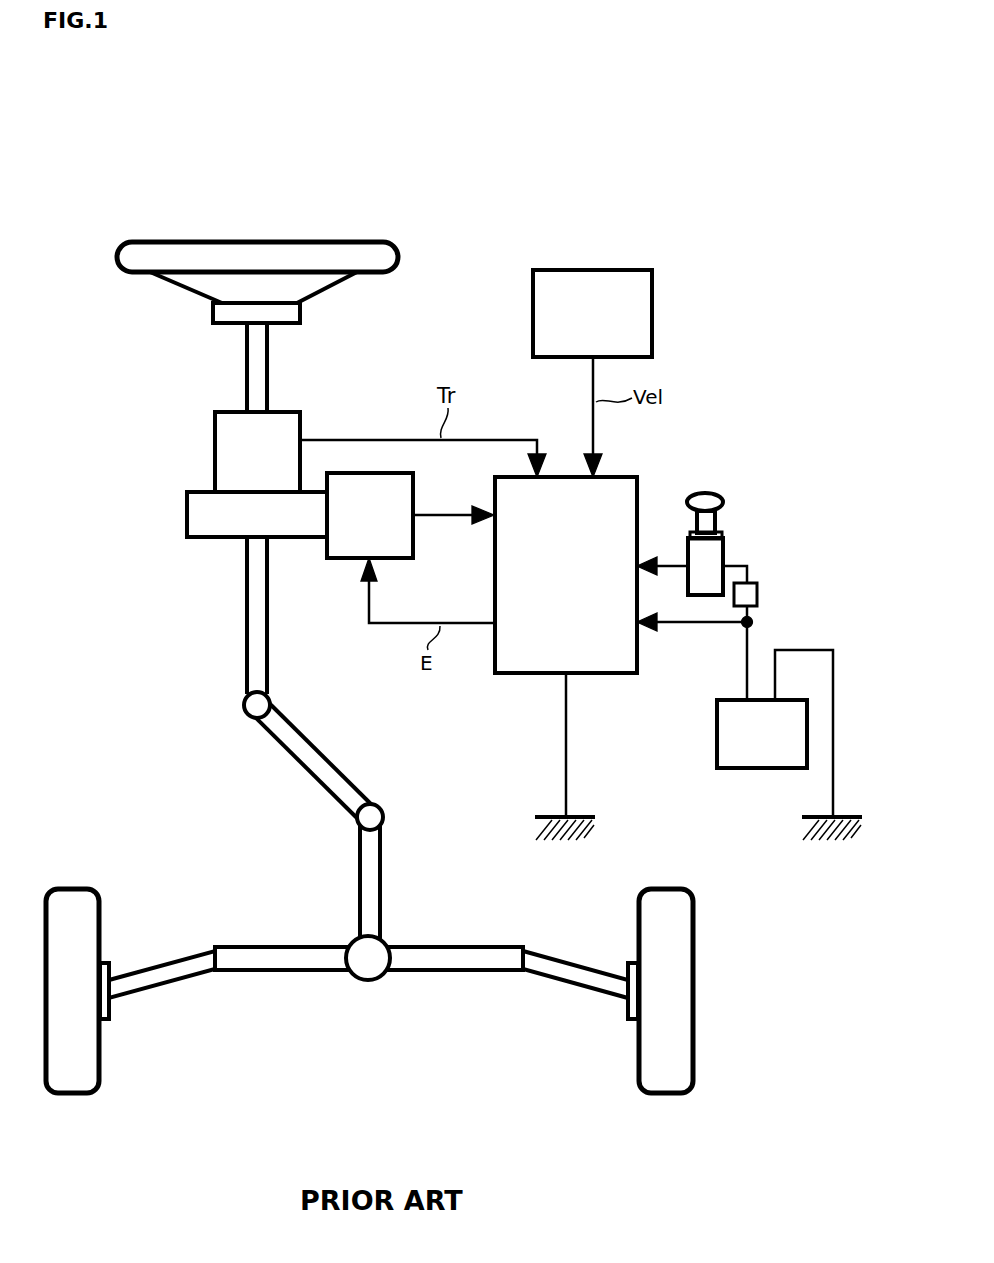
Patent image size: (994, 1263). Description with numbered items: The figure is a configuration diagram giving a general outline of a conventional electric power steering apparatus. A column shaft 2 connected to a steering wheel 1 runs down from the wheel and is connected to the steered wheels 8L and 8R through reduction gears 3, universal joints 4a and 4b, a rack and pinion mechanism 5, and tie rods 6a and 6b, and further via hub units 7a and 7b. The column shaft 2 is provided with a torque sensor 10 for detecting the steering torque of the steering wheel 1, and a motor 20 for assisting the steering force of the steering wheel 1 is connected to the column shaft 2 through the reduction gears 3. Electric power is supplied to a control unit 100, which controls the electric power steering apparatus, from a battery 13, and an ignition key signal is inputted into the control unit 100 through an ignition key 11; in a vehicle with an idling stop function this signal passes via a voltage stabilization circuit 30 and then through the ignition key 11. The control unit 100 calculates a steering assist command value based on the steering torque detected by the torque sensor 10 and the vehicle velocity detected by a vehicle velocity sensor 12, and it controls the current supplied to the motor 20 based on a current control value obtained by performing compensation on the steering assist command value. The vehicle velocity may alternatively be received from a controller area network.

The steering wheel 1 is at (398, 252).
The column shaft 2 is at (247, 372).
The torque sensor 10 is at (215, 441).
The reduction gears 3 is at (187, 520).
The motor 20 is at (413, 478).
The control unit 100 is at (637, 481).
The vehicle velocity sensor 12 is at (652, 281).
The ignition key 11 is at (723, 501).
The voltage stabilization circuit 30 is at (757, 594).
The battery 13 is at (717, 724).
The universal joint 4a is at (244, 710).
The universal joint 4b is at (357, 822).
The rack and pinion mechanism 5 is at (386, 940).
The tie rod 6a is at (142, 967).
The tie rod 6b is at (556, 958).
The hub unit 7a is at (111, 1016).
The hub unit 7b is at (626, 1016).
The steered wheel 8L is at (100, 1079).
The steered wheel 8R is at (638, 1079).